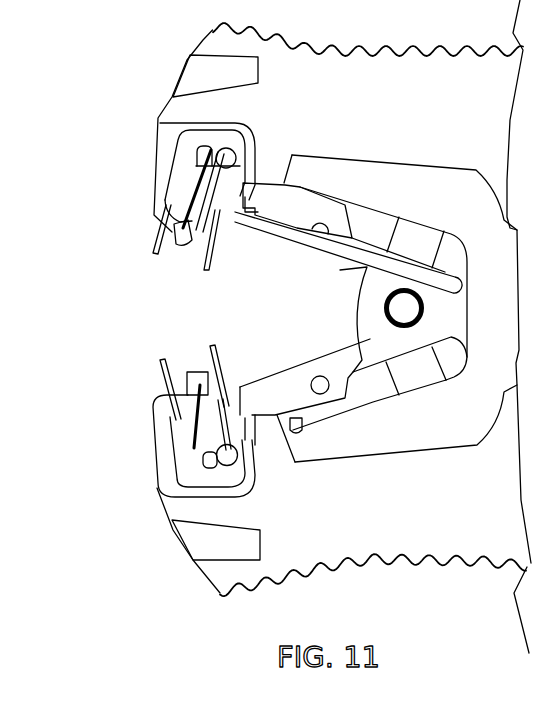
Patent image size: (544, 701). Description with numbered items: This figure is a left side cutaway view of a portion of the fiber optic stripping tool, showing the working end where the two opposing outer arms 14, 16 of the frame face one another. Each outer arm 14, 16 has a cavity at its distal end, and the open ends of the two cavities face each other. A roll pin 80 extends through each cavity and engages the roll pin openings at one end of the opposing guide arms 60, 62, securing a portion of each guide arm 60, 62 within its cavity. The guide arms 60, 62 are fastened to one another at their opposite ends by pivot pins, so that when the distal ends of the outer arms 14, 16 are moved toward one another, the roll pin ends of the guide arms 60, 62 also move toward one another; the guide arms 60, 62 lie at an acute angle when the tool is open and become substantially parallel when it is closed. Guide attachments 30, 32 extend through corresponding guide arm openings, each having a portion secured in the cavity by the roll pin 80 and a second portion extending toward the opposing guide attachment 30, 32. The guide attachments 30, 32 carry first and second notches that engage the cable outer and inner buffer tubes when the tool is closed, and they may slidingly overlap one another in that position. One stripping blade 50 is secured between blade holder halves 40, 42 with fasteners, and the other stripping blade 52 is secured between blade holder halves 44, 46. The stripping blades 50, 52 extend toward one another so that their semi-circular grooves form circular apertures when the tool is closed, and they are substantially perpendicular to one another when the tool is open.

The outer arm 14 is at (378, 523).
The outer arm 16 is at (381, 123).
The guide attachment 30 is at (180, 437).
The guide attachment 32 is at (185, 163).
The blade holder half 40 is at (213, 408).
The blade holder half 42 is at (188, 405).
The blade holder half 44 is at (257, 192).
The blade holder half 46 is at (193, 188).
The stripping blade 50 is at (185, 403).
The stripping blade 52 is at (177, 243).
The guide arm 60 is at (290, 382).
The guide arm 62 is at (302, 248).
The roll pin 80 is at (232, 160).